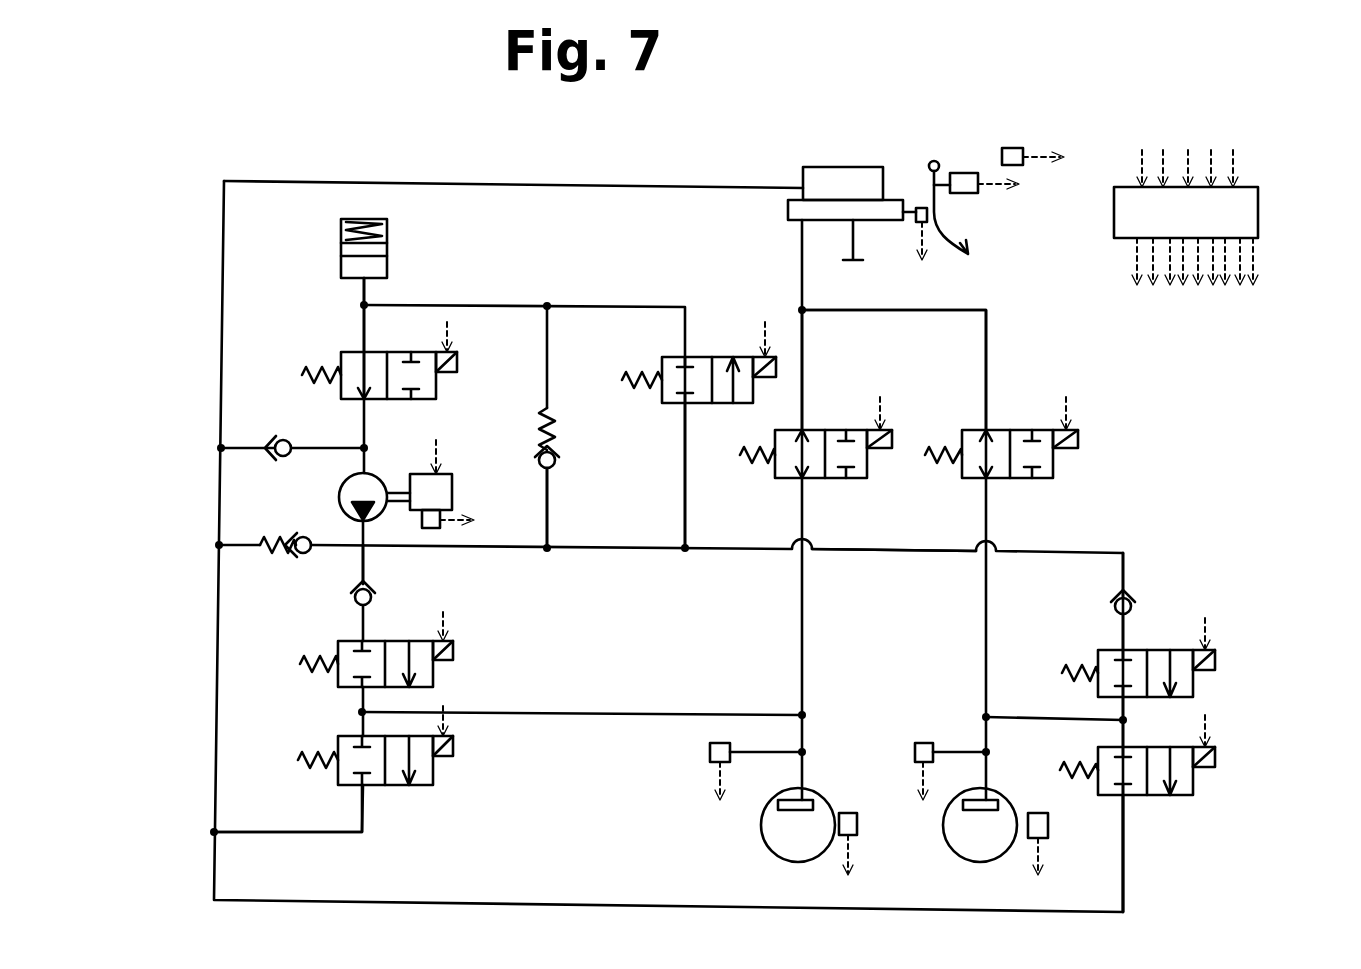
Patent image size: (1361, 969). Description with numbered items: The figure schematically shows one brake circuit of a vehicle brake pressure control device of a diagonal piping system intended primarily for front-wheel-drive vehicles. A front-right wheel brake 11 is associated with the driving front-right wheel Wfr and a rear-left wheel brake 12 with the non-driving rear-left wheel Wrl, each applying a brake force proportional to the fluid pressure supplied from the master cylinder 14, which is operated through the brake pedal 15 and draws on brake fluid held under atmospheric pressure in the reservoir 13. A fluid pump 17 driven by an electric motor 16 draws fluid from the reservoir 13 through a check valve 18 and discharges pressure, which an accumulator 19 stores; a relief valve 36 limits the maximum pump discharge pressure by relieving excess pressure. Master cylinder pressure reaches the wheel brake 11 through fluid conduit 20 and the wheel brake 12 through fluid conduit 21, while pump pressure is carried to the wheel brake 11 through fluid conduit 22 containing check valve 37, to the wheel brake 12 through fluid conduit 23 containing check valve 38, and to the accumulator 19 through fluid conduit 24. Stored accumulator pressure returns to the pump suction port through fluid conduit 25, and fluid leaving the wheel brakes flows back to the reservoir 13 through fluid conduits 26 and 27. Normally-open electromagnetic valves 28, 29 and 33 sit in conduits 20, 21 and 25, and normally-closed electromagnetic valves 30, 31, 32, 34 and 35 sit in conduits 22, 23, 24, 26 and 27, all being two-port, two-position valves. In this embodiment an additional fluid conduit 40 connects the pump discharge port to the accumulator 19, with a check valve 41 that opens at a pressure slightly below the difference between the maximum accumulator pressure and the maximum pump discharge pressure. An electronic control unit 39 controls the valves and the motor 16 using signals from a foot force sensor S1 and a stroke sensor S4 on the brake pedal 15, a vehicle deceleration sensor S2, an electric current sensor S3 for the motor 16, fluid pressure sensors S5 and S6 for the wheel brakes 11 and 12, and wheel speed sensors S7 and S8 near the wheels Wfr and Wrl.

The front-right wheel brake 11 is at (812, 798).
The rear-left wheel brake 12 is at (995, 800).
The reservoir 13 is at (838, 167).
The master cylinder 14 is at (788, 208).
The brake pedal 15 is at (950, 240).
The electric motor 16 is at (452, 480).
The fluid pump 17 is at (370, 478).
The check valve 18 is at (278, 443).
The accumulator 19 is at (341, 260).
The fluid conduit 20 is at (802, 352).
The fluid conduit 21 is at (986, 352).
The fluid conduit 22 is at (357, 563).
The fluid conduit 23 is at (858, 553).
The fluid conduit 24 is at (685, 432).
The fluid conduit 25 is at (364, 330).
The fluid conduit 26 is at (332, 833).
The fluid conduit 27 is at (1125, 858).
The normally-open type electromagnetic valve 28 is at (840, 480).
The normally-open type electromagnetic valve 29 is at (1025, 480).
The normally-closed type electromagnetic valve 30 is at (400, 641).
The normally-closed type electromagnetic valve 31 is at (1165, 650).
The normally-closed type electromagnetic valve 32 is at (720, 357).
The normally-open type electromagnetic valve 33 is at (397, 352).
The normally-closed type electromagnetic valve 34 is at (397, 787).
The normally-closed type electromagnetic valve 35 is at (1180, 797).
The relief valve 36 is at (300, 536).
The check valve 37 is at (355, 600).
The check valve 38 is at (1135, 600).
The electronic control unit 39 is at (1250, 215).
The fluid conduit 40 is at (547, 512).
The check valve 41 is at (554, 462).
The foot force sensor S1 is at (918, 207).
The vehicle deceleration sensor S2 is at (1015, 148).
The electric current sensor S3 is at (456, 523).
The stroke sensor S4 is at (962, 173).
The fluid pressure sensor S5 is at (710, 752).
The fluid pressure sensor S6 is at (920, 742).
The front-right wheel speed sensor S7 is at (855, 815).
The rear-left wheel speed sensor S8 is at (1048, 828).
The front-right wheel Wfr is at (763, 842).
The rear-left wheel Wrl is at (945, 840).